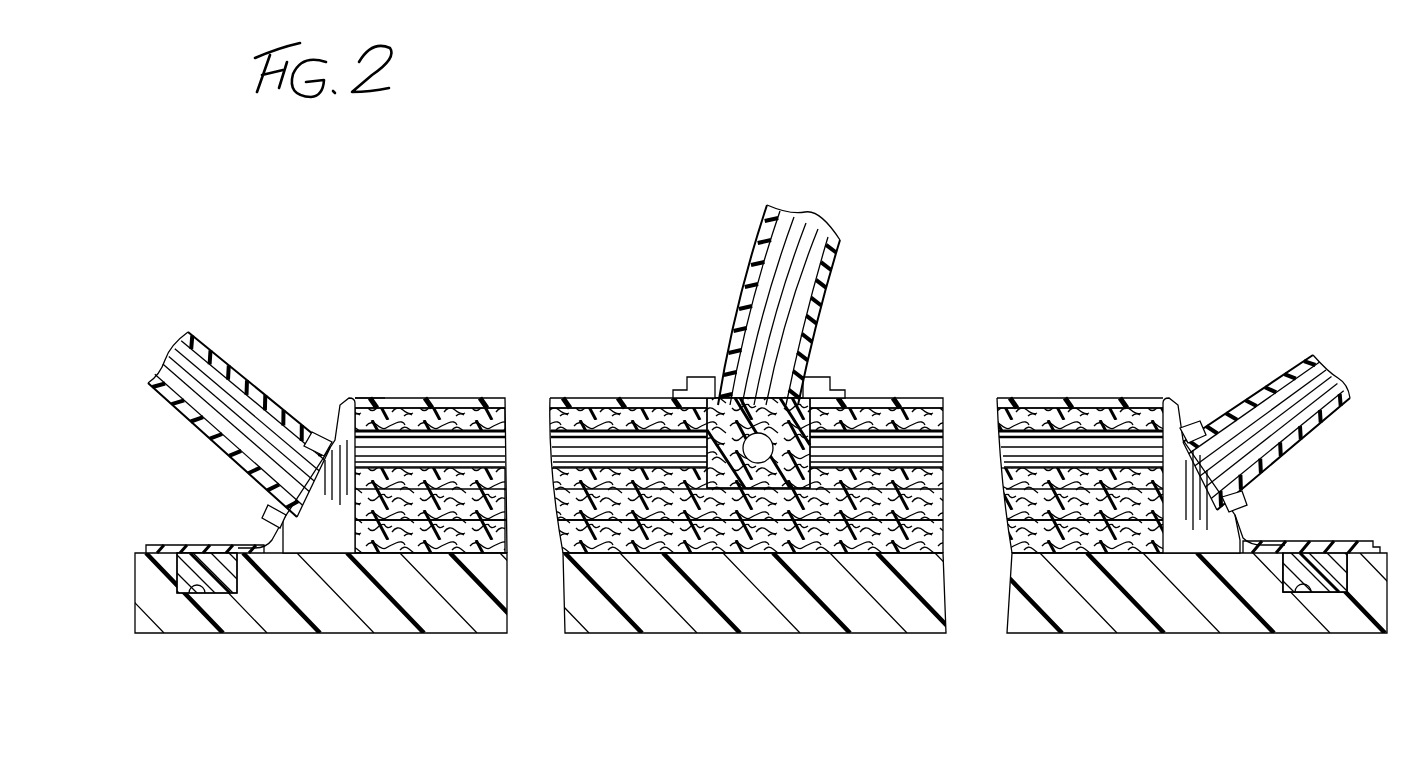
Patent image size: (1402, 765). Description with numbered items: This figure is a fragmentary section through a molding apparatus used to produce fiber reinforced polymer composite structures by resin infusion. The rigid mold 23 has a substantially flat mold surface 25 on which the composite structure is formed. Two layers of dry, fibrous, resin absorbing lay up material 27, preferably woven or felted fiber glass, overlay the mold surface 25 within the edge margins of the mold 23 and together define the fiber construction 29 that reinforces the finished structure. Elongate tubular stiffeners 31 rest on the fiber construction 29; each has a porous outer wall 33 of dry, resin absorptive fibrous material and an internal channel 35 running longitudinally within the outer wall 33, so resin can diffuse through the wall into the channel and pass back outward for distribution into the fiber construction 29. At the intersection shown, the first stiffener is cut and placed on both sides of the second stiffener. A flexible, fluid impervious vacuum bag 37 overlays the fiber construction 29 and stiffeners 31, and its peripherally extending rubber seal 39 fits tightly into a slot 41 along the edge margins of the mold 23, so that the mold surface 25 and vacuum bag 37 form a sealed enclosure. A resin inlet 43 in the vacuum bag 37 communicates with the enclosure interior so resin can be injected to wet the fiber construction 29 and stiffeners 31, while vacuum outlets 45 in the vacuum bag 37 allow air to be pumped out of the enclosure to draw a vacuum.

The rigid mold 23 is at (1152, 635).
The mold surface 25 is at (338, 553).
The lay up material 27 is at (893, 512).
The fiber construction 29 is at (740, 556).
The stiffeners 31 is at (838, 415).
The outer wall 33 is at (423, 417).
The internal channel 35 is at (762, 435).
The vacuum bag 37 is at (373, 398).
The rubber seal 39 is at (230, 593).
The slot 41 is at (200, 590).
The resin inlet 43 is at (745, 392).
The vacuum outlets 45 is at (292, 463).